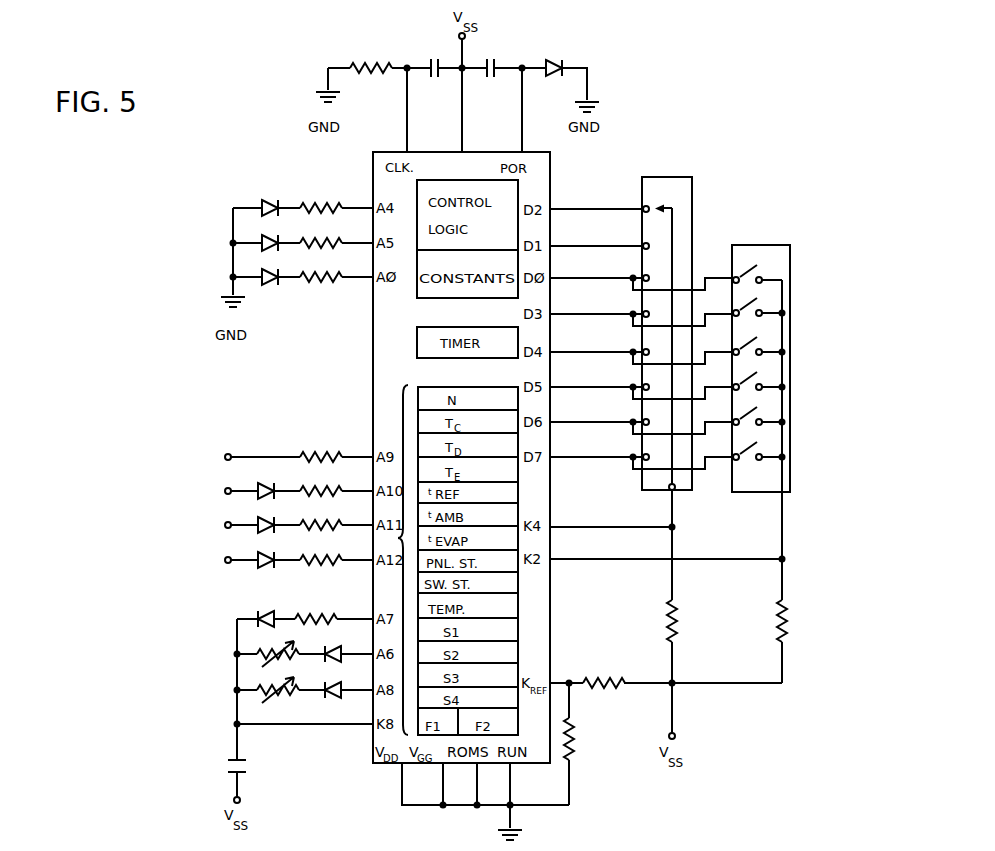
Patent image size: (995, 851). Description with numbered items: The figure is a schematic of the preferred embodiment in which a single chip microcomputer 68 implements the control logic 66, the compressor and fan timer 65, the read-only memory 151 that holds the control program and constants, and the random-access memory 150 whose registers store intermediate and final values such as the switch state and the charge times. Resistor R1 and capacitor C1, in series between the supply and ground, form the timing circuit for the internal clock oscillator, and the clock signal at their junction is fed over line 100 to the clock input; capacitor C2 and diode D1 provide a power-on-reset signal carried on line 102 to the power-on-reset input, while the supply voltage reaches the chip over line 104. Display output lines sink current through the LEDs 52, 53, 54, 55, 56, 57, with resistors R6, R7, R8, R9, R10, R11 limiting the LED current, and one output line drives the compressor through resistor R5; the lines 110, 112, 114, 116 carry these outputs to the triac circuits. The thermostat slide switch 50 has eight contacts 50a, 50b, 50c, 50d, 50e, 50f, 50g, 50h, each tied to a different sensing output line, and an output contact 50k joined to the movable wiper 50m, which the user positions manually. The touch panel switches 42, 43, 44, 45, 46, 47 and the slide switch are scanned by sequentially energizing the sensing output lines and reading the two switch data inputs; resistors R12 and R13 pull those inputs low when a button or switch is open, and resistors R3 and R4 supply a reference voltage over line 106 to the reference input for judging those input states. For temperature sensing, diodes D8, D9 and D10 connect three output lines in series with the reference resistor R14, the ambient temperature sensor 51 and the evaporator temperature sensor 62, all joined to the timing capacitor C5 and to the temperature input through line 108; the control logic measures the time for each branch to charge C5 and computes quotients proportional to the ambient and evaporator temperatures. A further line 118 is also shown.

The resistor R1 is at (384, 55).
The capacitor C1 is at (437, 50).
The capacitor C2 is at (494, 50).
The diode D1 is at (545, 52).
The line 100 is at (405, 108).
The line 104 is at (461, 108).
The line 102 is at (521, 108).
The control logic 66 is at (550, 175).
The LED 56 is at (260, 203).
The LED 54 is at (258, 237).
The LED 52 is at (258, 275).
The resistor R9 is at (325, 178).
The resistor R10 is at (338, 250).
The resistor R11 is at (333, 284).
The read-only memory 151 is at (402, 286).
The compressor and fan timer 65 is at (398, 343).
The single chip microcomputer 68 is at (373, 377).
The random-access memory 150 is at (403, 420).
The line 116 is at (224, 458).
The line 114 is at (225, 491).
The line 112 is at (225, 525).
The line 110 is at (225, 560).
The LED 55 is at (260, 486).
The LED 53 is at (264, 518).
The LED 57 is at (262, 553).
The resistor R5 is at (347, 432).
The resistor R6 is at (322, 489).
The resistor R7 is at (323, 522).
The resistor R8 is at (323, 557).
The diode D8 is at (268, 612).
The reference resistor R14 is at (335, 597).
The ambient temperature sensor 51 is at (272, 650).
The evaporator temperature sensor 62 is at (272, 688).
The diode D9 is at (336, 632).
The diode D10 is at (334, 700).
The timing capacitor C5 is at (222, 762).
The line 108 is at (350, 732).
The thermostat slide switch 50 is at (676, 182).
The movable wiper 50m is at (678, 206).
The output contact 50k is at (668, 491).
The contact 50a is at (642, 207).
The contact 50b is at (642, 244).
The contact 50c is at (642, 276).
The contact 50d is at (642, 312).
The contact 50e is at (642, 350).
The contact 50f is at (642, 385).
The contact 50g is at (642, 420).
The contact 50h is at (642, 455).
The touch panel switch 47 is at (760, 271).
The touch panel switch 46 is at (760, 308).
The touch panel switch 44 is at (760, 346).
The touch panel switch 45 is at (760, 383).
The touch panel switch 43 is at (760, 420).
The touch panel switch 42 is at (760, 457).
The resistor R13 is at (678, 619).
The resistor R12 is at (790, 614).
The resistor R3 is at (618, 673).
The resistor R4 is at (582, 728).
The line 106 is at (560, 680).
The line 118 is at (720, 846).